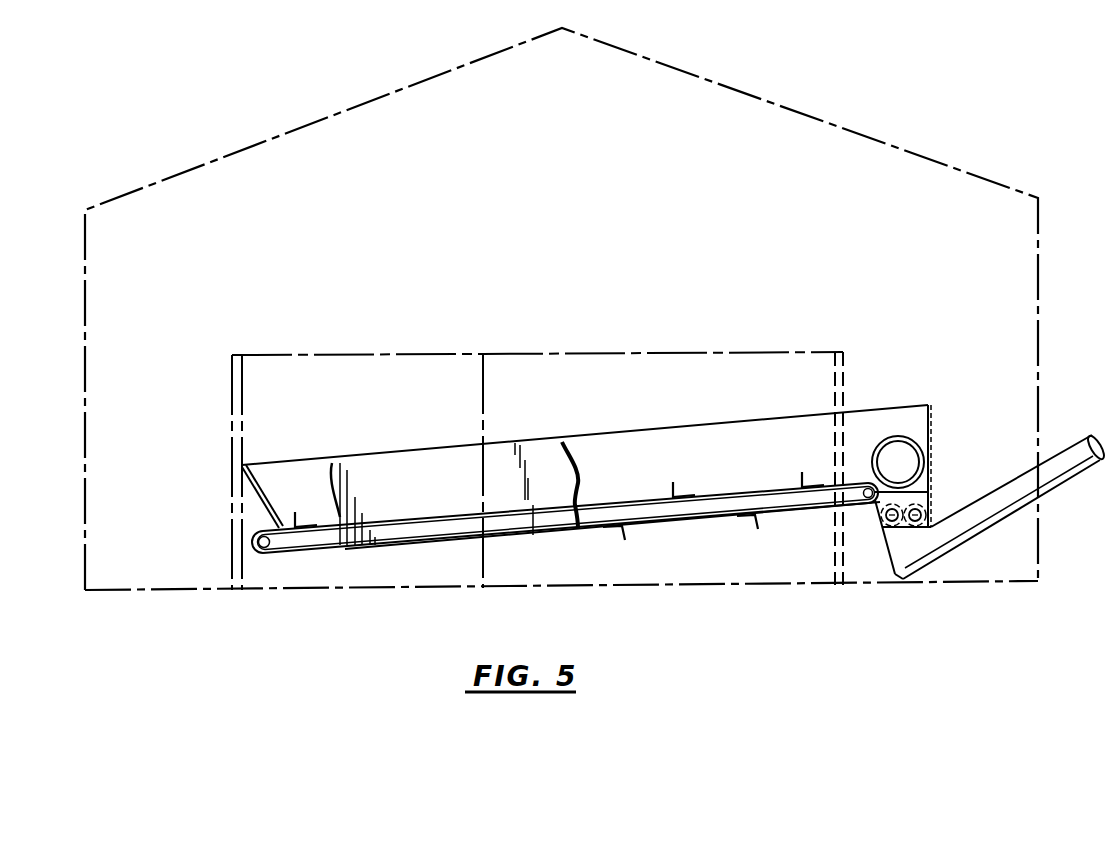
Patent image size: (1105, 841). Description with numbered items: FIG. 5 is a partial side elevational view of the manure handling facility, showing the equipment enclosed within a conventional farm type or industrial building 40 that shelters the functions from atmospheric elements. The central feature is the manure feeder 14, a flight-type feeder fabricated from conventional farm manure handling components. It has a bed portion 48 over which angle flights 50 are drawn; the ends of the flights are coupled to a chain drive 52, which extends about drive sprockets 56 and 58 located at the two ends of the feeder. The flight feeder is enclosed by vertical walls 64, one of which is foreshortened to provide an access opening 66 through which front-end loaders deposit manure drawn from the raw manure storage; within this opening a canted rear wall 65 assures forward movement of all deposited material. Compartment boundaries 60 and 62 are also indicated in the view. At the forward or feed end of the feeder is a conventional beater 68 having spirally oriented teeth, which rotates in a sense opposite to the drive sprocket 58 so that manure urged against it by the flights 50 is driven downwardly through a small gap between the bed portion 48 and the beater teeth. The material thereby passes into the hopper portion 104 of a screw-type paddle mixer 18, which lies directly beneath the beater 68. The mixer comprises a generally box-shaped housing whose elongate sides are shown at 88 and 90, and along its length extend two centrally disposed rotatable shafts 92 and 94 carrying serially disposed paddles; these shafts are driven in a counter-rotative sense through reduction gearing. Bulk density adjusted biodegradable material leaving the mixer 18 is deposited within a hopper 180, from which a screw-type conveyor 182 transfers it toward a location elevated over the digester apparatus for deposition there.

The building 40 is at (845, 128).
The compartment wall 60 is at (232, 388).
The first compartment 62 is at (332, 365).
The vertical wall 64 is at (598, 365).
The manure feeder 14 is at (452, 432).
The access opening 66 is at (397, 431).
The canted rear wall 65 is at (263, 492).
The bed portion 48 is at (742, 488).
The chain drive 52 is at (673, 520).
The drive sprocket 56 is at (265, 555).
The drive sprocket 58 is at (866, 485).
The angle flights 50 is at (295, 512).
The housing side 88 is at (930, 497).
The rotatable shaft 94 is at (930, 517).
The beater 68 is at (907, 457).
The housing side 90 is at (878, 512).
The rotatable shaft 92 is at (881, 531).
The hopper portion 104 is at (878, 538).
The hopper 180 is at (910, 543).
The screw-type conveyor 182 is at (978, 513).
The paddle mixer 18 is at (990, 410).